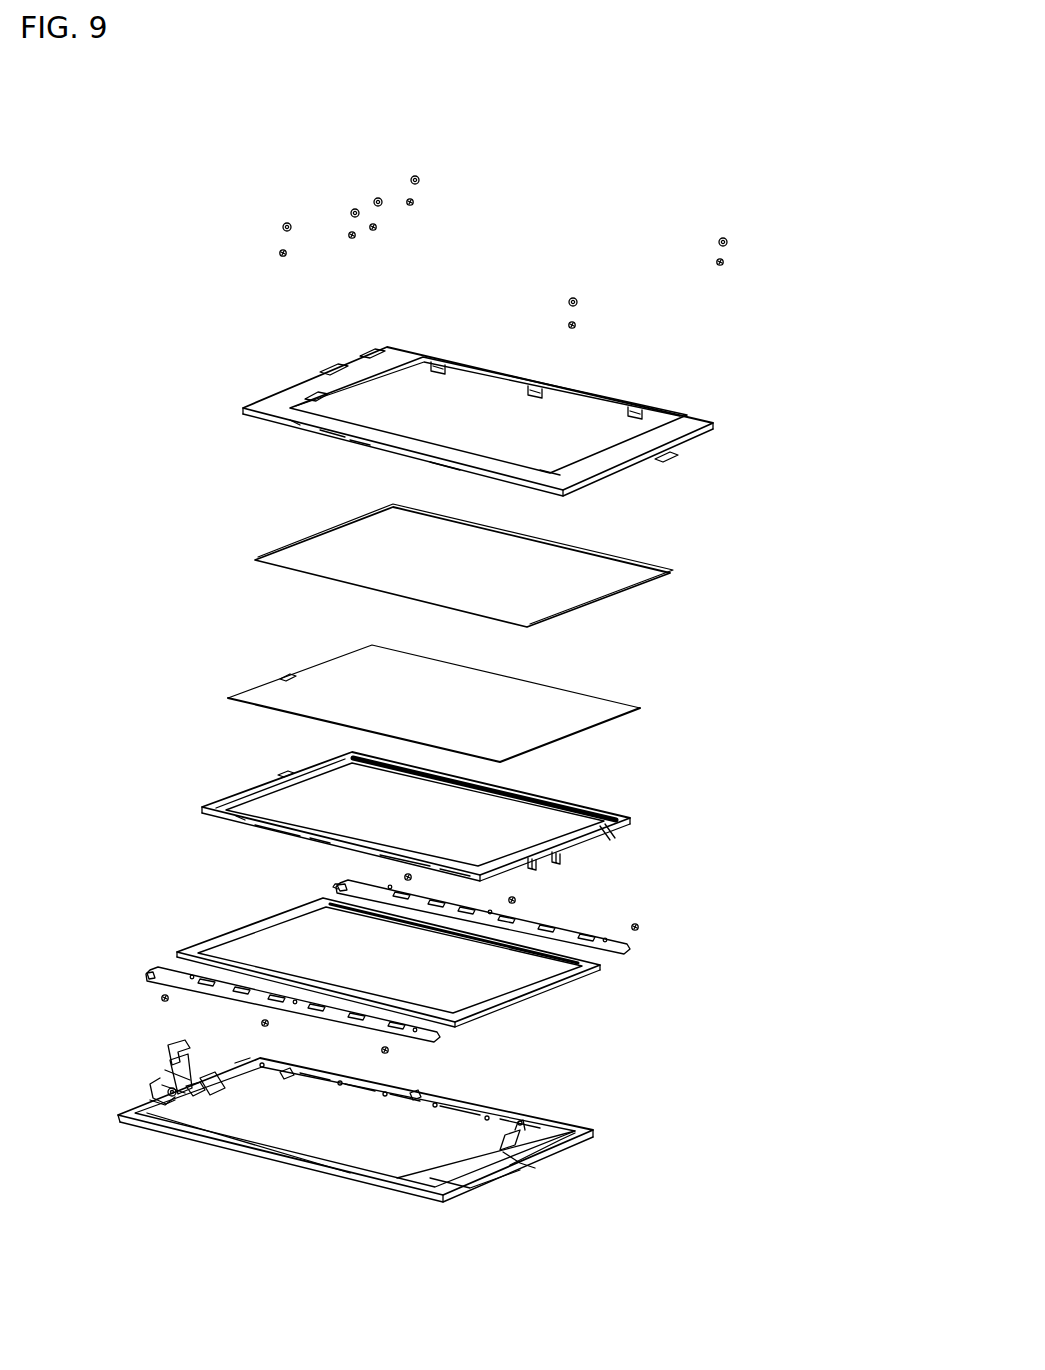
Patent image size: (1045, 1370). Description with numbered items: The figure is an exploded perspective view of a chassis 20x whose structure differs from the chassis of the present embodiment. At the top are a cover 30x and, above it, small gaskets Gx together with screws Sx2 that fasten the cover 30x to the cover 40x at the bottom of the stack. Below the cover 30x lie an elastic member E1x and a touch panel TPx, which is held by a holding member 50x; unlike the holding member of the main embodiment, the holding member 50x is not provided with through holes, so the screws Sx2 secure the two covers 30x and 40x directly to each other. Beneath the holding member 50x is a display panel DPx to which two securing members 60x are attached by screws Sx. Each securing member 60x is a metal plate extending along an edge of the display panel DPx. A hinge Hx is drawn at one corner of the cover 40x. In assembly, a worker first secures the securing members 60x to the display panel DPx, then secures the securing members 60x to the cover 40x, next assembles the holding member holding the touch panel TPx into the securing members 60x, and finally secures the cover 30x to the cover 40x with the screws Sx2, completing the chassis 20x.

The chassis 20x is at (542, 165).
The gasket Gx is at (414, 176).
The screws Sx2 is at (286, 254).
The cover 30x is at (622, 477).
The elastic member E1x is at (573, 607).
The touch panel TPx is at (623, 713).
The holding member 50x is at (600, 837).
The screws Sx is at (412, 877).
The display panel DPx is at (542, 1000).
The securing member 60x is at (424, 1033).
The hinge Hx is at (163, 1062).
The cover 40x is at (537, 1170).